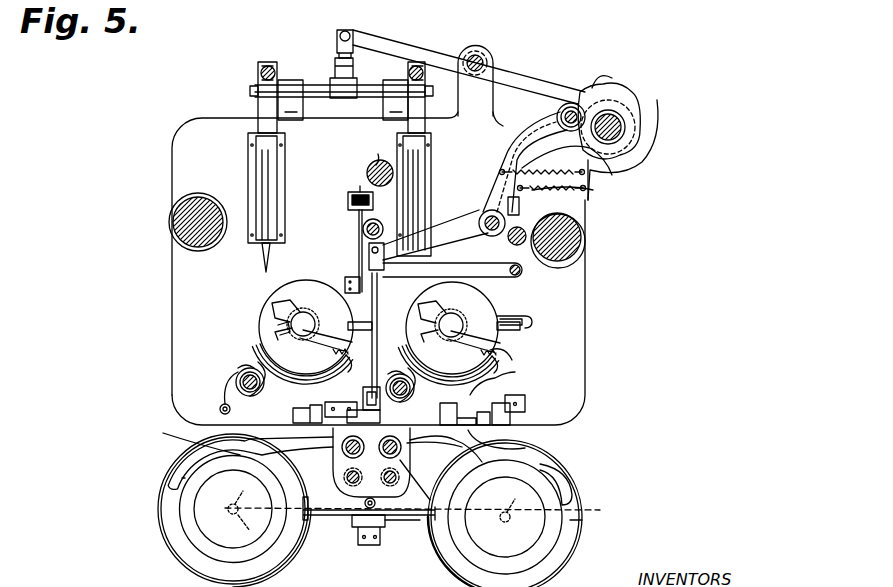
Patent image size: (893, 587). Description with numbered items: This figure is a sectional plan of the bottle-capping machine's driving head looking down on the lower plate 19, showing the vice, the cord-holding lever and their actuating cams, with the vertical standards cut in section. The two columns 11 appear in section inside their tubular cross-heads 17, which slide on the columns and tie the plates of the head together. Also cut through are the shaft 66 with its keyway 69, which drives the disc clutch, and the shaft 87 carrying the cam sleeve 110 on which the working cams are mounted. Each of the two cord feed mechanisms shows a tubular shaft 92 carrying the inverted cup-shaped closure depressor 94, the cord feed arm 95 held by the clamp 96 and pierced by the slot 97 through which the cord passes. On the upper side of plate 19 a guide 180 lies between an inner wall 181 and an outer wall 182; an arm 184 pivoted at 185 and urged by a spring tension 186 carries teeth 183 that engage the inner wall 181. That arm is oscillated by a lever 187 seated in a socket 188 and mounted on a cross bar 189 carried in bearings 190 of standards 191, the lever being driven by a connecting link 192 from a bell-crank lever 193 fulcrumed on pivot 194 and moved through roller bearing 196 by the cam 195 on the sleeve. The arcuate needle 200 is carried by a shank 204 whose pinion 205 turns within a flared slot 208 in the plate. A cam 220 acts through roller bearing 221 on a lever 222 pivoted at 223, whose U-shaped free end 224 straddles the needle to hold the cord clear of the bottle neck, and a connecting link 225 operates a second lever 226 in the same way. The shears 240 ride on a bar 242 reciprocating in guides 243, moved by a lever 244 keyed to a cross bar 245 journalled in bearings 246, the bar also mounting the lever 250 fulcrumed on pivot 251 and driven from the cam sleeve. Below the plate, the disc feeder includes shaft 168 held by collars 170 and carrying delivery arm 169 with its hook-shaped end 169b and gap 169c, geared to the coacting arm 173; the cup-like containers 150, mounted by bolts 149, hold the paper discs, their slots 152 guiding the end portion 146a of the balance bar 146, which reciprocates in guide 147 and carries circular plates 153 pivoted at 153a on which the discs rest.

The column 11 is at (582, 225).
The cross-head 17 is at (585, 253).
The lower plate 19 is at (586, 311).
The shaft 66 is at (367, 165).
The keyway 69 is at (375, 160).
The shaft 87 is at (624, 130).
The tubular shaft 92 is at (312, 312).
The closure depressor 94 is at (270, 290).
The cord feed arm 95 is at (295, 312).
The clamp 96 is at (282, 308).
The slot 97 is at (326, 340).
The cam sleeve 110 is at (618, 118).
The balance bar 146 is at (418, 520).
The end portion of balance bar 146a is at (234, 526).
The guide 147 is at (390, 545).
The bolt 149 is at (365, 506).
The cup-like container 150 is at (158, 506).
The slot 152 is at (308, 515).
The circular plate 153 is at (371, 515).
The pivot 153a is at (365, 501).
The shaft 168 is at (402, 448).
The paper disc delivery arm 169 is at (410, 462).
The hook-shaped member 169b is at (584, 525).
The gap 169c is at (560, 485).
The collar 170 is at (400, 478).
The delivery arm 173 is at (340, 458).
The guide 180 is at (262, 338).
The inner wall 181 is at (258, 330).
The outer wall 182 is at (258, 348).
The teeth 183 is at (512, 352).
The arm 184 is at (264, 388).
The pivot 185 is at (240, 366).
The spring tension 186 is at (240, 370).
The lever 187 is at (505, 397).
The socket 188 is at (290, 404).
The cross bar 189 is at (498, 452).
The bearing 190 is at (320, 426).
The standard 191 is at (508, 409).
The connecting link 192 is at (378, 295).
The bell-crank lever 193 is at (496, 150).
The pivot 194 is at (488, 210).
The cam 195 is at (622, 84).
The roller bearing 196 is at (573, 102).
The needle 200 is at (377, 320).
The shank 204 is at (358, 218).
The pinion 205 is at (348, 198).
The flared slot 208 is at (360, 188).
The cam 220 is at (648, 118).
The roller bearing 221 is at (606, 177).
The lever 222 is at (604, 191).
The pivot 223 is at (522, 246).
The free end 224 is at (527, 312).
The connecting link 225 is at (452, 270).
The second lever 226 is at (365, 280).
The shears 240 is at (262, 250).
The bar 242 is at (257, 105).
The guide 243 is at (256, 160).
The lever 244 is at (266, 62).
The cross bar 245 is at (332, 72).
The bearing 246 is at (302, 108).
The lever 250 is at (400, 40).
The pivot 251 is at (482, 58).